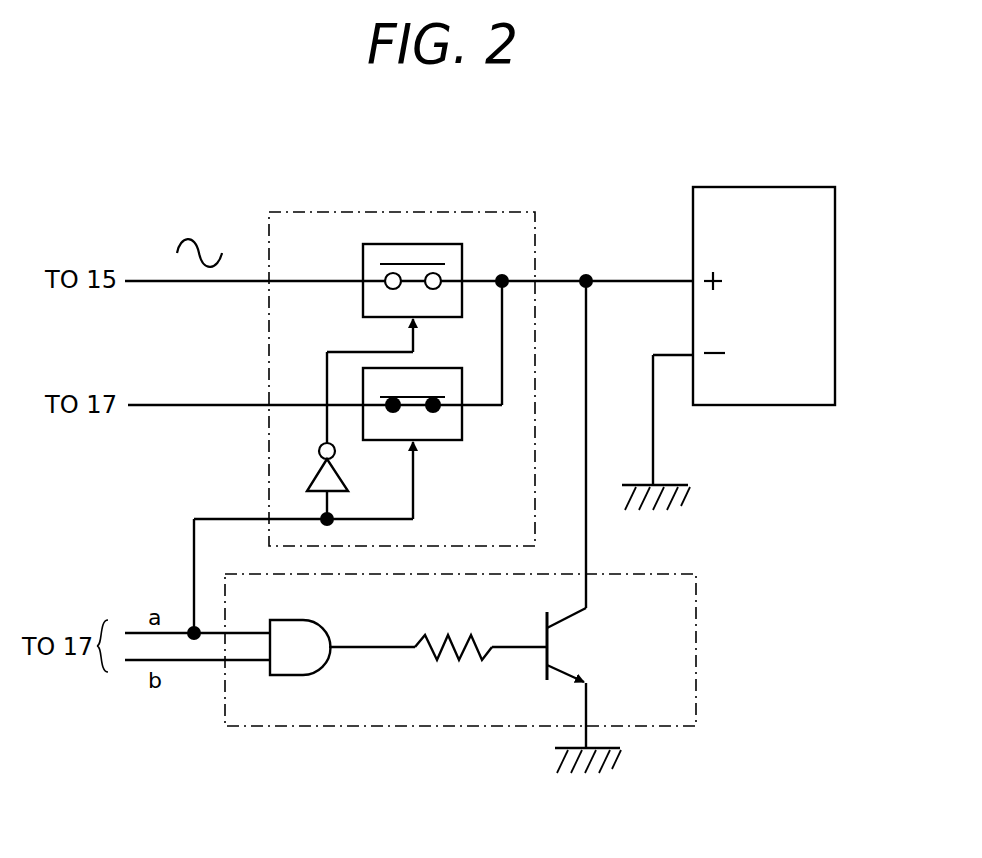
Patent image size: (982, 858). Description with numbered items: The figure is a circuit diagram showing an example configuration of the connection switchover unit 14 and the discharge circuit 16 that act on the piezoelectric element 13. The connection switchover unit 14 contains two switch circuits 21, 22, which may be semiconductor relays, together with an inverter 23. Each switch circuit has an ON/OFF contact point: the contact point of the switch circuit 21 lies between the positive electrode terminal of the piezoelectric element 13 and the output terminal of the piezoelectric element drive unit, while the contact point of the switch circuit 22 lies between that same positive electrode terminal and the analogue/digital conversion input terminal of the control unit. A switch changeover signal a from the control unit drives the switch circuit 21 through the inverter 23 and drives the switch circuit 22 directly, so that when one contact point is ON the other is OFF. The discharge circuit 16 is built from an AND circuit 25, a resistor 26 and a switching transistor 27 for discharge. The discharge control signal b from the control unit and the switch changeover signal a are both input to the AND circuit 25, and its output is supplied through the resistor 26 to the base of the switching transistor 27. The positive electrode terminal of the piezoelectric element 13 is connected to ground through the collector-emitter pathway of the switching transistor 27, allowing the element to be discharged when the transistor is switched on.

The piezoelectric element 13 is at (780, 187).
The connection switchover unit 14 is at (489, 212).
The discharge circuit 16 is at (696, 595).
The switch circuit 21 is at (363, 262).
The switch circuit 22 is at (445, 440).
The inverter 23 is at (313, 478).
The AND circuit 25 is at (317, 622).
The resistor 26 is at (472, 637).
The switching transistor 27 is at (577, 642).